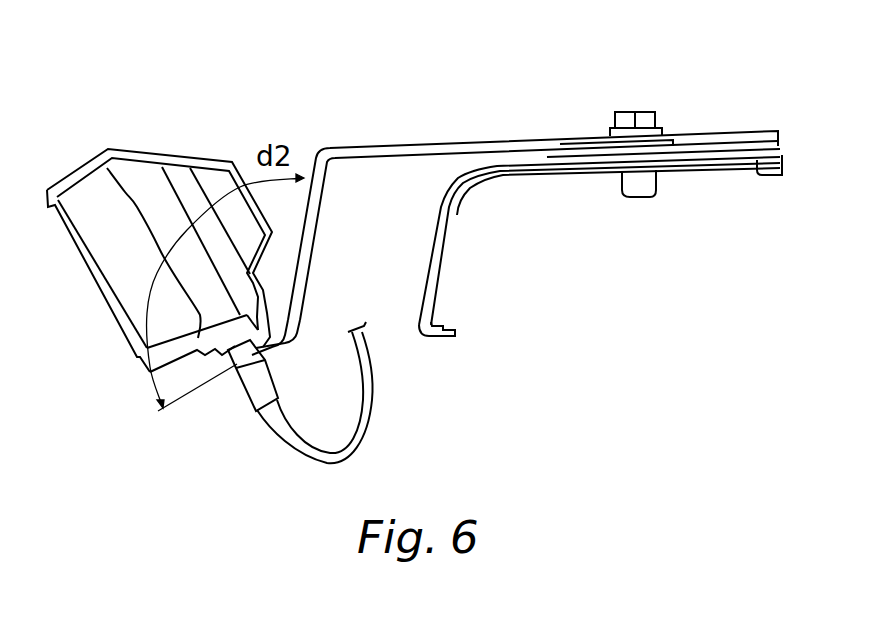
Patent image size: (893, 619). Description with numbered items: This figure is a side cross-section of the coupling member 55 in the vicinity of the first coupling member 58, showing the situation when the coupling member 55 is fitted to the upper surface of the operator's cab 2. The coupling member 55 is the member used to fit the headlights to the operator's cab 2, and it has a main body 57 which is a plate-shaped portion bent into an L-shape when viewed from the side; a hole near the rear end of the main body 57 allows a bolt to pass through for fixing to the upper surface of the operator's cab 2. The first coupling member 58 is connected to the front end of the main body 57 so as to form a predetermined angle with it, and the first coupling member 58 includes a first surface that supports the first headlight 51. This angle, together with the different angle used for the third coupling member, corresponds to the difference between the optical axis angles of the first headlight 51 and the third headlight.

The operator's cab 2 is at (745, 135).
The first headlight 51 is at (148, 160).
The coupling member 55 is at (321, 93).
The main body 57 is at (358, 147).
The first coupling member 58 is at (228, 400).